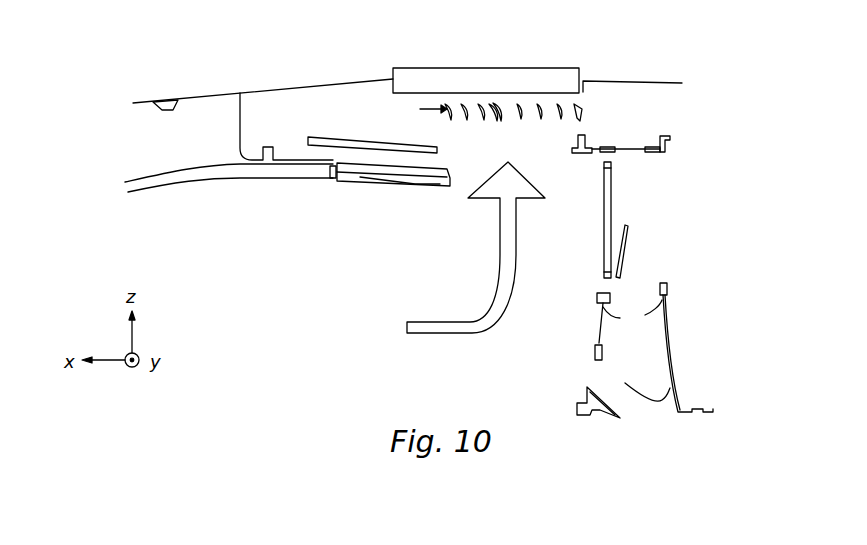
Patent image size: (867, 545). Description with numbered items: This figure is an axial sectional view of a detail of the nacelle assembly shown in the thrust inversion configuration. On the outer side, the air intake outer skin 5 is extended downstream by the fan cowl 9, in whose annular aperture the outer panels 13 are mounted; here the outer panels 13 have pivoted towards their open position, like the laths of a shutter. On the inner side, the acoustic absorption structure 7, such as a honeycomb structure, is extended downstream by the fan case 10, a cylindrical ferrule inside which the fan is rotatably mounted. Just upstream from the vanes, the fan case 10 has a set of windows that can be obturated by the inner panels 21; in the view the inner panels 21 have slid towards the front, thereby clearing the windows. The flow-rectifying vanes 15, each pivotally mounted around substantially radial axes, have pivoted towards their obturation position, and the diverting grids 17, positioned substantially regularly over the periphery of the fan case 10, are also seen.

The air intake outer skin 5 is at (146, 102).
The acoustic absorption structure 7 is at (162, 192).
The fan cowl 9 is at (360, 80).
The fan case 10 is at (287, 168).
The outer panels 13 is at (492, 82).
The flow-rectifying vanes 15 is at (605, 197).
The diverting grids 17 is at (582, 108).
The inner panels 21 is at (337, 143).